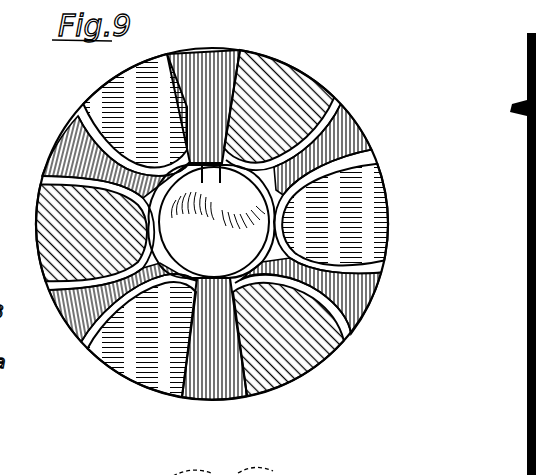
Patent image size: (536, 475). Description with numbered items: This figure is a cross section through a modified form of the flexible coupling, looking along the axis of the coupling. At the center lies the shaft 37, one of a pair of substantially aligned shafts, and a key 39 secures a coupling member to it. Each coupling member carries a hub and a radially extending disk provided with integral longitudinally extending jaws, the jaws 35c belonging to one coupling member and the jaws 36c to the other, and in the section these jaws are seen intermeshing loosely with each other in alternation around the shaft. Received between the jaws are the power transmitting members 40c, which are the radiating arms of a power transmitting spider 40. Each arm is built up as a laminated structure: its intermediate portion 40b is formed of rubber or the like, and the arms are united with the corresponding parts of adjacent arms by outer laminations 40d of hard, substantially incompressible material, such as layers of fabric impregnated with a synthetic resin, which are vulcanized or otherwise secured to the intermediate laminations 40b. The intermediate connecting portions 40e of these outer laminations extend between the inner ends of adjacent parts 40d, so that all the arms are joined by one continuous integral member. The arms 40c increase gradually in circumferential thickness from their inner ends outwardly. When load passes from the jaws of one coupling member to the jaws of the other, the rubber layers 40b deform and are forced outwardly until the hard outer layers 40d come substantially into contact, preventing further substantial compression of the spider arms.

The jaws 35c is at (118, 90).
The jaws 36c is at (285, 82).
The shaft 37 is at (214, 222).
The key 39 is at (212, 183).
The power transmitting spider 40 is at (201, 44).
The intermediate portions 40b is at (349, 118).
The power transmitting members 40c is at (236, 49).
The outer laminations 40d is at (322, 103).
The intermediate connecting portions 40e is at (242, 283).